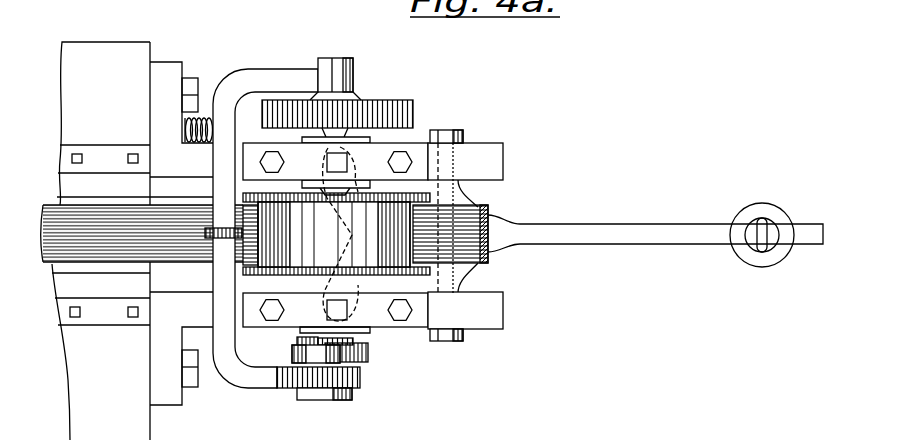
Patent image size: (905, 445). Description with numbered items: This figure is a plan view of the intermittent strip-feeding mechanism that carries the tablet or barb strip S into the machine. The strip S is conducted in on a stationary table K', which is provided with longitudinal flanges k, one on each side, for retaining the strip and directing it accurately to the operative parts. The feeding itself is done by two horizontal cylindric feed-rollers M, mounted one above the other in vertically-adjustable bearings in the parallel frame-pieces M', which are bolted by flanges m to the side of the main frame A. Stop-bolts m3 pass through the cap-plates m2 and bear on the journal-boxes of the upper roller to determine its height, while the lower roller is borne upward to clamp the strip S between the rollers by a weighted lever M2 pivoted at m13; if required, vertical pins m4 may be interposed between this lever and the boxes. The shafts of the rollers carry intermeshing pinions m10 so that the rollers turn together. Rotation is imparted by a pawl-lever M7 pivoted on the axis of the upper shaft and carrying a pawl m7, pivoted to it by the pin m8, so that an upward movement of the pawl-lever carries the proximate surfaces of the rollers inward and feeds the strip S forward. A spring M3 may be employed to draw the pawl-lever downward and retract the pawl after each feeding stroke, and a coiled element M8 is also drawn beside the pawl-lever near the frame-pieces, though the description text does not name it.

The main frame A is at (101, 241).
The flanges m is at (181, 233).
The stationary table K' is at (101, 235).
The longitudinal flanges k is at (103, 192).
The spring M8 is at (206, 115).
The pawl-lever M7 is at (263, 373).
The feed-rollers M is at (332, 248).
The stop-bolts m3 is at (336, 232).
The cap-plates m2 is at (351, 235).
The weighted lever M2 is at (533, 235).
The frame-pieces M' is at (465, 236).
The spring M3 is at (762, 228).
The intermeshing pinions m10 is at (418, 117).
The pivot m13 is at (446, 343).
The pin m8 is at (299, 339).
The pawl m7 is at (300, 349).
The vertical pins m4 is at (359, 352).
The strip S is at (254, 233).